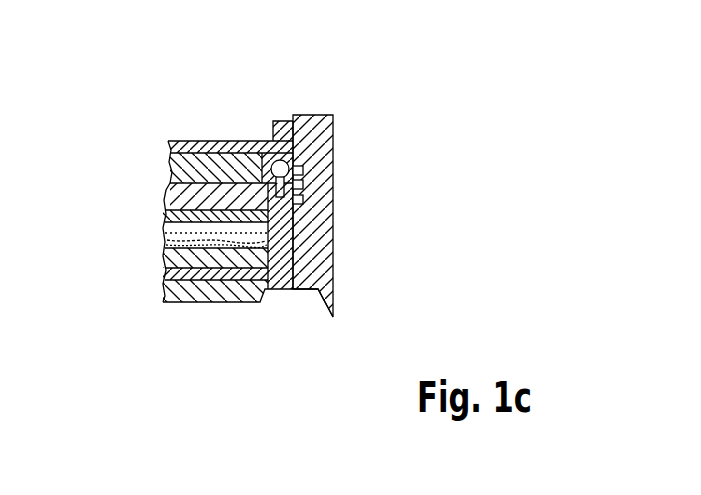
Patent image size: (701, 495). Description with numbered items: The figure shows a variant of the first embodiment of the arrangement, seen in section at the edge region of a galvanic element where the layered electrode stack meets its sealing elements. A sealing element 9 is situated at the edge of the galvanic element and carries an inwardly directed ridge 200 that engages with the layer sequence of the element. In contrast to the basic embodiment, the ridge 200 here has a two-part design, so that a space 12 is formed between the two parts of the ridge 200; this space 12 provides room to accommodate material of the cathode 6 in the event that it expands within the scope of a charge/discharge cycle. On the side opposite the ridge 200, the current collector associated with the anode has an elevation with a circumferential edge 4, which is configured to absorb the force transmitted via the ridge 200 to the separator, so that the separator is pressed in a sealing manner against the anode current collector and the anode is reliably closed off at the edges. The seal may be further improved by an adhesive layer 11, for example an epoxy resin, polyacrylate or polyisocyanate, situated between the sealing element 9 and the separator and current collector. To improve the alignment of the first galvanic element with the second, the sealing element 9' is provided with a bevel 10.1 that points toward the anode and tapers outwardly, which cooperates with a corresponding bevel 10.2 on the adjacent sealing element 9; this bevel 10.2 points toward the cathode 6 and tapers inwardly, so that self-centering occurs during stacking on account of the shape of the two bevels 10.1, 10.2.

The ridge 200 is at (293, 168).
The sealing element 9' is at (338, 126).
The space 12 is at (305, 171).
The bevel 10.1 is at (303, 184).
The bevel 10.2 is at (303, 200).
The adhesive layer 11 is at (295, 243).
The sealing element 9 is at (347, 216).
The cathode 6 is at (170, 185).
The circumferential edge 4 is at (281, 245).